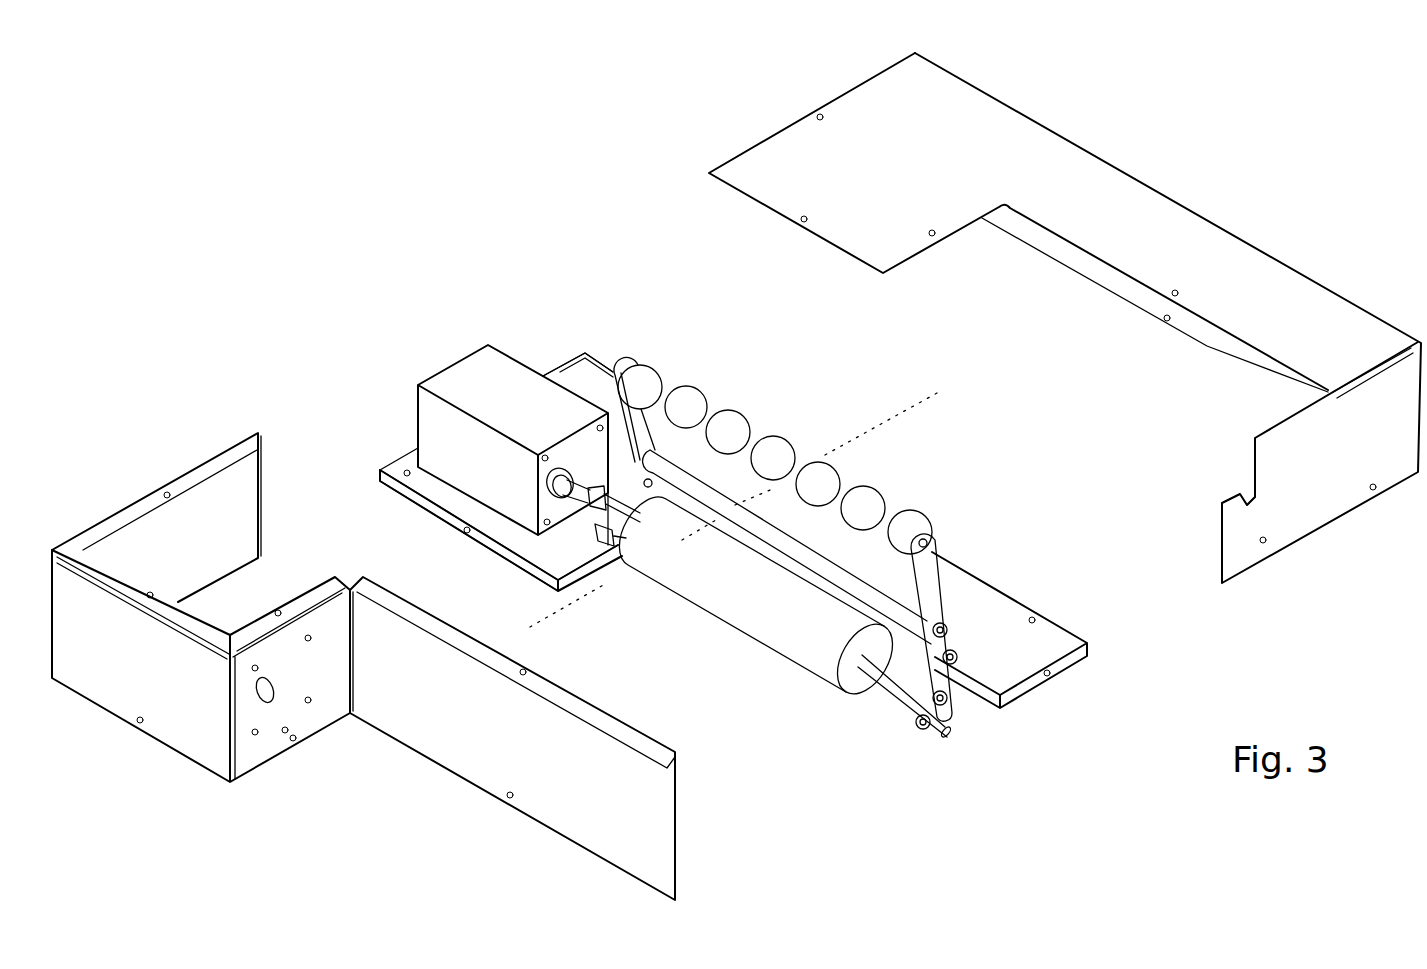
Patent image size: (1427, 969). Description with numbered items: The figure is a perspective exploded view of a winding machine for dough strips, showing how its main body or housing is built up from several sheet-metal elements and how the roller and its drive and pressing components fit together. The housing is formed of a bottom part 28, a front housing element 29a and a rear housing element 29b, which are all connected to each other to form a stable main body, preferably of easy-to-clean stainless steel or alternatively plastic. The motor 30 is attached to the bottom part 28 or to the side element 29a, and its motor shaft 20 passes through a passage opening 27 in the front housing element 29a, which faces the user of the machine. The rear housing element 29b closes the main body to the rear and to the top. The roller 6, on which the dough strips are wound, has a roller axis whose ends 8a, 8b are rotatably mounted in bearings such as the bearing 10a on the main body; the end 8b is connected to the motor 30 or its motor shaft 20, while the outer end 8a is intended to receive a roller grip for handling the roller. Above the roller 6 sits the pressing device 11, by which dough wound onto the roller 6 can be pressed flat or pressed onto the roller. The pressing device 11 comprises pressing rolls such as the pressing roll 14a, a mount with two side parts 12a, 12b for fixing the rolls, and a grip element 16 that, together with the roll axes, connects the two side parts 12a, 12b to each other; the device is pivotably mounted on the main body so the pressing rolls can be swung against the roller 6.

The roller 6 is at (782, 622).
The outer end of the roller axis 8a is at (908, 682).
The end of the roller axis 8b is at (617, 513).
The bearing 10a is at (1250, 498).
The pressing device 11 is at (953, 500).
The side part of the mount 12a is at (928, 573).
The side part of the mount 12b is at (640, 425).
The pressing roll 14a is at (823, 560).
The grip element 16 is at (727, 427).
The motor shaft 20 is at (557, 495).
The passage opening 27 is at (273, 692).
The bottom part 28 is at (593, 380).
The front housing element 29a is at (217, 502).
The rear housing element 29b is at (1052, 152).
The motor 30 is at (472, 373).